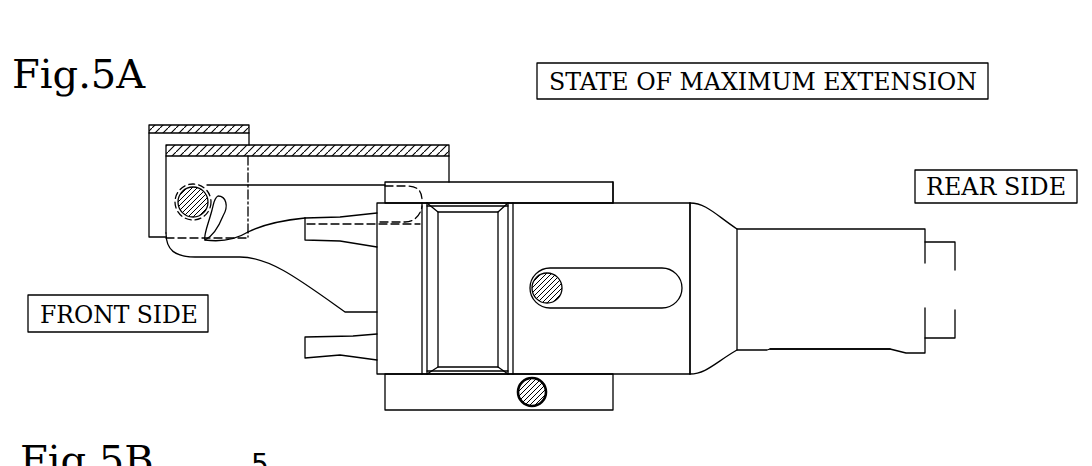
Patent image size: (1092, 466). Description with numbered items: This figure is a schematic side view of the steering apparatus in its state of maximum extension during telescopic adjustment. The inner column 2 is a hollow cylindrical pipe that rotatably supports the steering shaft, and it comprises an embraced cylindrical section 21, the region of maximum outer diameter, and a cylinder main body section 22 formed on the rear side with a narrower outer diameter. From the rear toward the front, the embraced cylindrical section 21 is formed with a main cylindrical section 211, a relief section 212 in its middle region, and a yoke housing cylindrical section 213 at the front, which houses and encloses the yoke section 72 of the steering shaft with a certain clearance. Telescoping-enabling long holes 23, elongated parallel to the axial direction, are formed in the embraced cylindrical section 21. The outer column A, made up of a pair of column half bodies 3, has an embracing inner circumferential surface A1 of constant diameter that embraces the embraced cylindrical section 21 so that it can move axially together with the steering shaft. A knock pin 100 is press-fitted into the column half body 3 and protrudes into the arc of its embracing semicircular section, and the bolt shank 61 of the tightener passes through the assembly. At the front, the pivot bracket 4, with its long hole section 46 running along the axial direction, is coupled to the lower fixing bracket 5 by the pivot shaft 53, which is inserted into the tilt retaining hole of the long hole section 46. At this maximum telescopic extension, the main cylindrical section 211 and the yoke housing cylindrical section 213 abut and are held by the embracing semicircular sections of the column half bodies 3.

The lower fixing bracket 5 is at (199, 128).
The pivot shaft 53 is at (180, 196).
The pivot bracket 4 is at (385, 147).
The long hole section 46 is at (303, 208).
The yoke section 72 is at (317, 345).
The embraced cylindrical section 21 is at (628, 375).
The embracing inner circumferential surface A1 is at (527, 208).
The column half body 3 is at (582, 404).
The yoke housing cylindrical section 213 is at (405, 365).
The relief section 212 is at (458, 365).
The telescoping-enabling long hole 23 is at (682, 283).
The knock pin 100 is at (558, 283).
The bolt shank 61 is at (539, 407).
The inner column 2 is at (750, 230).
The main cylindrical section 211 is at (670, 353).
The cylinder main body section 22 is at (785, 333).
The outer column A is at (614, 194).